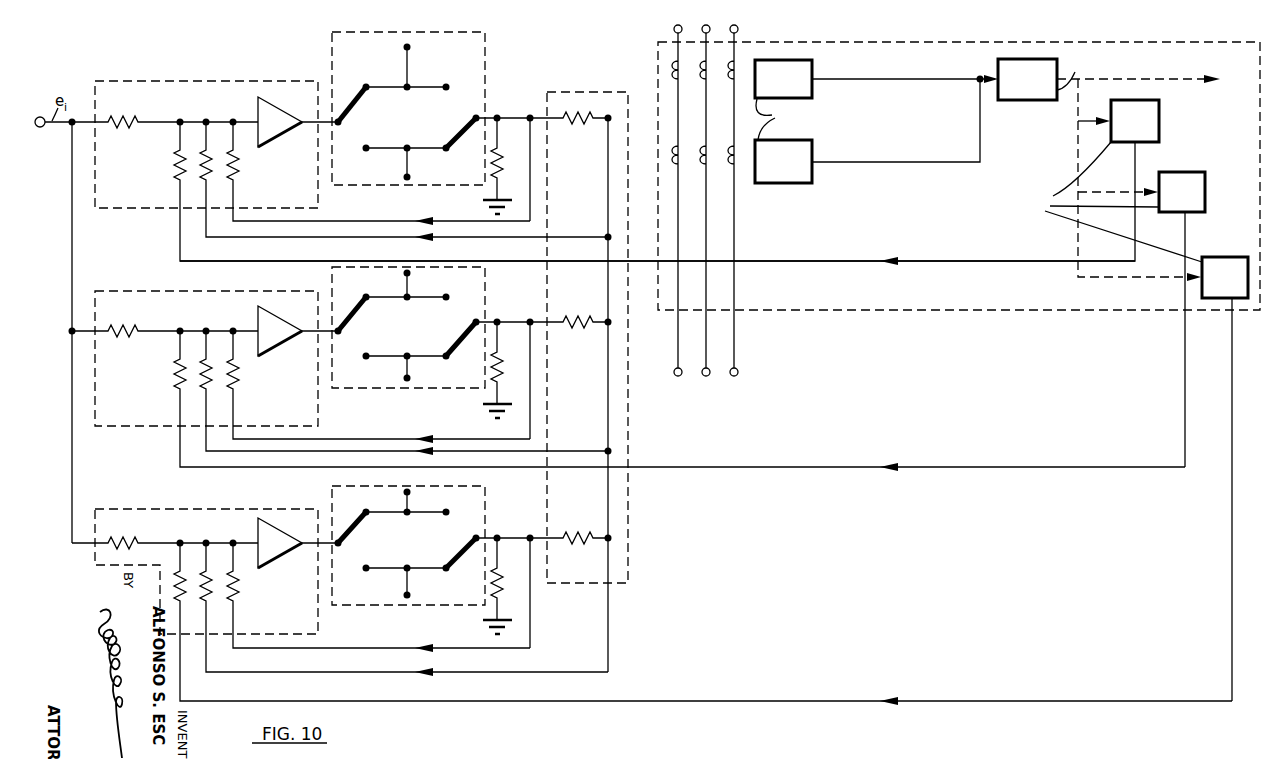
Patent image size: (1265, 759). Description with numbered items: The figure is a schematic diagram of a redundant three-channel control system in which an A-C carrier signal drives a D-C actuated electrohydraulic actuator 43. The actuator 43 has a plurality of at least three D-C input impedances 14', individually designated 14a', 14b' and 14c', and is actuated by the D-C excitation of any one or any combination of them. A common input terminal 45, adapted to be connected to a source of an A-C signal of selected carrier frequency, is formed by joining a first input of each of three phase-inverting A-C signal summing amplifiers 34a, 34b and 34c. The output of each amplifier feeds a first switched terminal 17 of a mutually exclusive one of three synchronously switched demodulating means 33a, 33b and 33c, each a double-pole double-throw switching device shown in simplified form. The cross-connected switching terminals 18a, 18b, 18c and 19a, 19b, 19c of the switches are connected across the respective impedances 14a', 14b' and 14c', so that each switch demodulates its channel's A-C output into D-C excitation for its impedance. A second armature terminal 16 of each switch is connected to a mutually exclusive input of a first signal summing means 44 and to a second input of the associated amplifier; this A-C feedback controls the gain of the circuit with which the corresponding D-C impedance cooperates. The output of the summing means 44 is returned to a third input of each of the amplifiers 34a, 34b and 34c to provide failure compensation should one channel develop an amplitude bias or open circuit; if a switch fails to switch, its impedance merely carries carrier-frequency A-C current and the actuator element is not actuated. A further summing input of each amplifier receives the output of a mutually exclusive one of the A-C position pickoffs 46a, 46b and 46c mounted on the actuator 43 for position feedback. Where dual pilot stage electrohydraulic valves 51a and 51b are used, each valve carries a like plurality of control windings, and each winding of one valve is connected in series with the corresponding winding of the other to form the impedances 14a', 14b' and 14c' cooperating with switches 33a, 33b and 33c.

The common input terminal 45 is at (40, 116).
The phase-inverting A-C signal summing amplifier 34a is at (175, 105).
The phase-inverting A-C signal summing amplifier 34b is at (182, 317).
The phase-inverting A-C signal summing amplifier 34c is at (180, 530).
The first switched terminal 17 is at (338, 119).
The cross-connected switching terminal 18a is at (410, 47).
The cross-connected switching terminal 18b is at (409, 273).
The cross-connected switching terminal 18c is at (409, 492).
The cross-connected switching terminal 19a is at (676, 376).
The cross-connected switching terminal 19b is at (409, 177).
The cross-connected switching terminal 19c is at (409, 580).
The second armature terminal 16 is at (500, 114).
The synchronously switched demodulating means 33a is at (465, 68).
The synchronously switched demodulating means 33b is at (468, 290).
The synchronously switched demodulating means 33c is at (466, 510).
The first signal summing means 44 is at (617, 497).
The D-C input impedances 14' is at (720, 367).
The D-C input impedance 14a' is at (652, 200).
The D-C input impedance 14b' is at (702, 200).
The D-C input impedance 14c' is at (732, 200).
The dual pilot stage electrohydraulic valve 51a is at (875, 79).
The dual pilot stage electrohydraulic valve 51b is at (867, 131).
The electrohydraulic actuator 43 is at (1020, 79).
The A-C position pickoff 46a is at (669, 180).
The A-C position pickoff 46b is at (1141, 319).
The A-C position pickoff 46c is at (1217, 479).